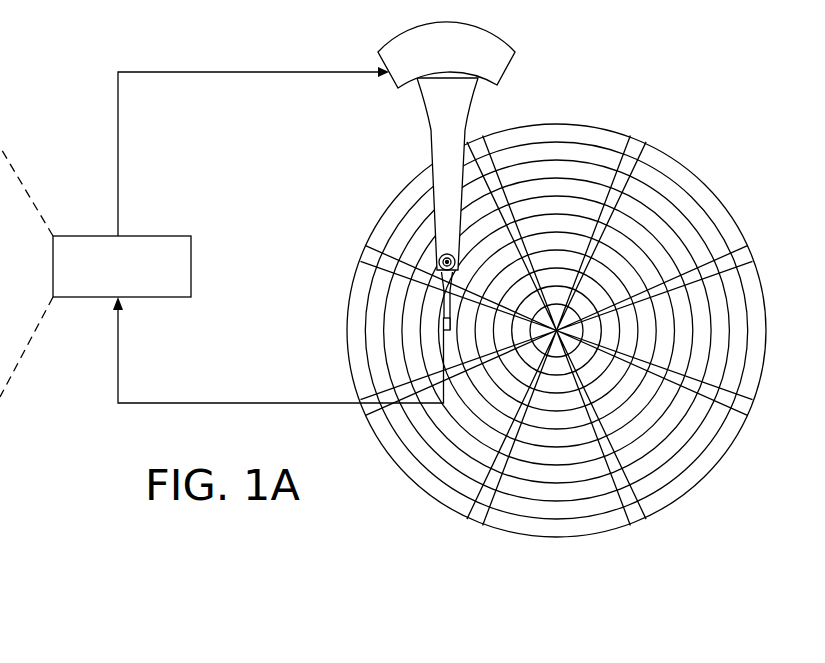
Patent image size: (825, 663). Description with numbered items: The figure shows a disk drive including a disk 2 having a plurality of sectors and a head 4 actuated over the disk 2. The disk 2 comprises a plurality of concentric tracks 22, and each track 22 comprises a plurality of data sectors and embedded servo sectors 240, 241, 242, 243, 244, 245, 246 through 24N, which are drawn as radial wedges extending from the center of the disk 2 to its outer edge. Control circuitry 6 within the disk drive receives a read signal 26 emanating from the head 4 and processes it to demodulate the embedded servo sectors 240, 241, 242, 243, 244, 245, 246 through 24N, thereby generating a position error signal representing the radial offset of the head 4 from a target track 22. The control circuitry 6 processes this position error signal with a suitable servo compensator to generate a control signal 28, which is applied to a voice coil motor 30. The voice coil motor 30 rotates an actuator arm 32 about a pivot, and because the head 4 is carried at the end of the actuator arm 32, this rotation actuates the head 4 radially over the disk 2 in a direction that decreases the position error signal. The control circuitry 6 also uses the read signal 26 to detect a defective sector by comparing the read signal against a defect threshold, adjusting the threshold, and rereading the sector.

The disk 2 is at (702, 172).
The head 4 is at (439, 334).
The control circuitry 6 is at (161, 236).
The track 22 is at (558, 152).
The embedded servo sector 240 is at (637, 143).
The embedded servo sector 241 is at (743, 254).
The embedded servo sector 242 is at (743, 412).
The embedded servo sector 243 is at (630, 512).
The embedded servo sector 244 is at (473, 513).
The embedded servo sector 245 is at (367, 408).
The embedded servo sector 246 is at (364, 240).
The embedded servo sector 24N is at (482, 140).
The read signal 26 is at (247, 403).
The control signal 28 is at (118, 142).
The voice coil motor (VCM) 30 is at (397, 87).
The actuator arm 32 is at (428, 153).